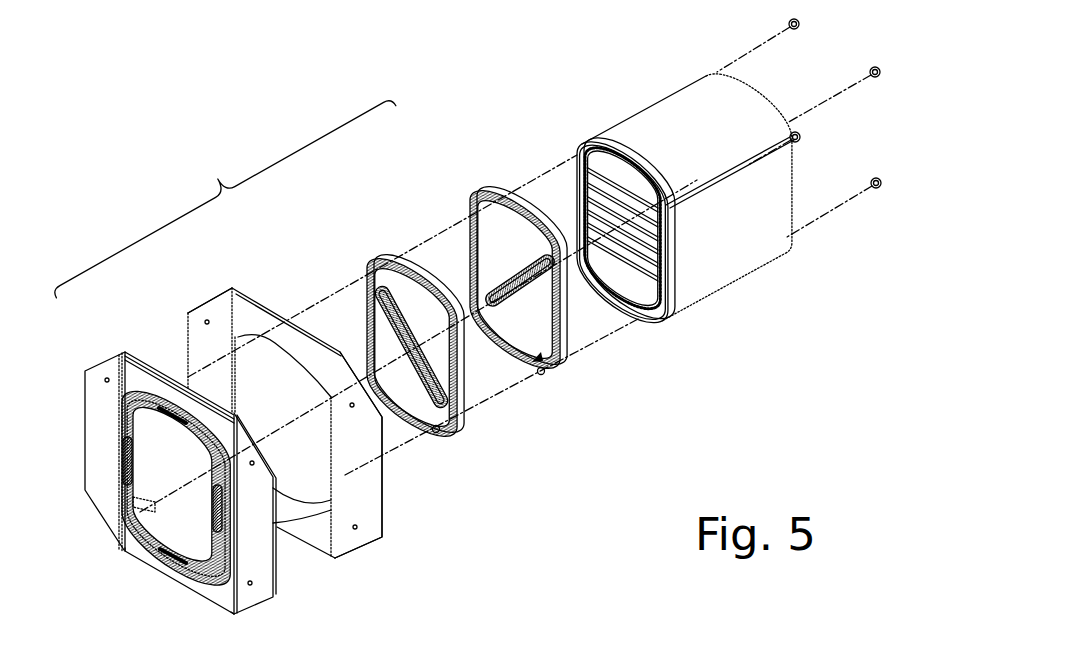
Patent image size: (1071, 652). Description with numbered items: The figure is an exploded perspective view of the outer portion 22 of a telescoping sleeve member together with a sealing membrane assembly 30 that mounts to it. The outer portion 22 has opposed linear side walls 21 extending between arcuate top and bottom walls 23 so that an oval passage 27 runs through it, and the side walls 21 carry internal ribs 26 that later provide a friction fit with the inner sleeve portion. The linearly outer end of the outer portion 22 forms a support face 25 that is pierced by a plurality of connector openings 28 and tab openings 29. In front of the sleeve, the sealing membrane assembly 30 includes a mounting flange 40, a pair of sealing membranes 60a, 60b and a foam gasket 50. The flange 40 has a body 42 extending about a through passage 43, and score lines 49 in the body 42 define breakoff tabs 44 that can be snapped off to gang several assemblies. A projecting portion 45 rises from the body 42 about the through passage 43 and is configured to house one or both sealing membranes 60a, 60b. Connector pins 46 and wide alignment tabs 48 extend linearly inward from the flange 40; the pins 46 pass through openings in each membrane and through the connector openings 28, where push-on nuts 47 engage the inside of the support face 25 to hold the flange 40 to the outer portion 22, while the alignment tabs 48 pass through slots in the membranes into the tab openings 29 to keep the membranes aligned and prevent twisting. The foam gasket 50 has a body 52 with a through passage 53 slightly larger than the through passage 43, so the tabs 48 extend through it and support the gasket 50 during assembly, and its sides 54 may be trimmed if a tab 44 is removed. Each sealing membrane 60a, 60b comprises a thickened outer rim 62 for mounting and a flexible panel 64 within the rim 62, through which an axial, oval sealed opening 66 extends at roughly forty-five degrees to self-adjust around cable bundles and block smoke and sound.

The side walls 21 is at (686, 217).
The outer portion 22 is at (782, 272).
The top and bottom walls 23 is at (728, 105).
The support face 25 is at (672, 282).
The internal ribs 26 is at (603, 167).
The passage 27 is at (628, 260).
The connector openings 28 is at (582, 148).
The tab openings 29 is at (623, 150).
The sealing membrane assembly 30 is at (220, 191).
The mounting flange 40 is at (214, 474).
The body 42 is at (150, 368).
The through passage 43 is at (162, 526).
The breakoff tabs 44 is at (100, 478).
The projecting portion 45 is at (127, 423).
The connector pins 46 is at (143, 512).
The push-on nut 47 is at (799, 26).
The alignment tabs 48 is at (144, 438).
The score lines 49 is at (125, 535).
The foam gasket 50 is at (301, 412).
The gasket body 52 is at (250, 306).
The through passage 53 is at (313, 487).
The sides 54 is at (193, 352).
The sealing membrane 60a is at (475, 412).
The sealing membrane 60b is at (577, 349).
The outer rim 62 is at (364, 265).
The flexible panel 64 is at (430, 412).
The sealed opening 66 is at (397, 330).